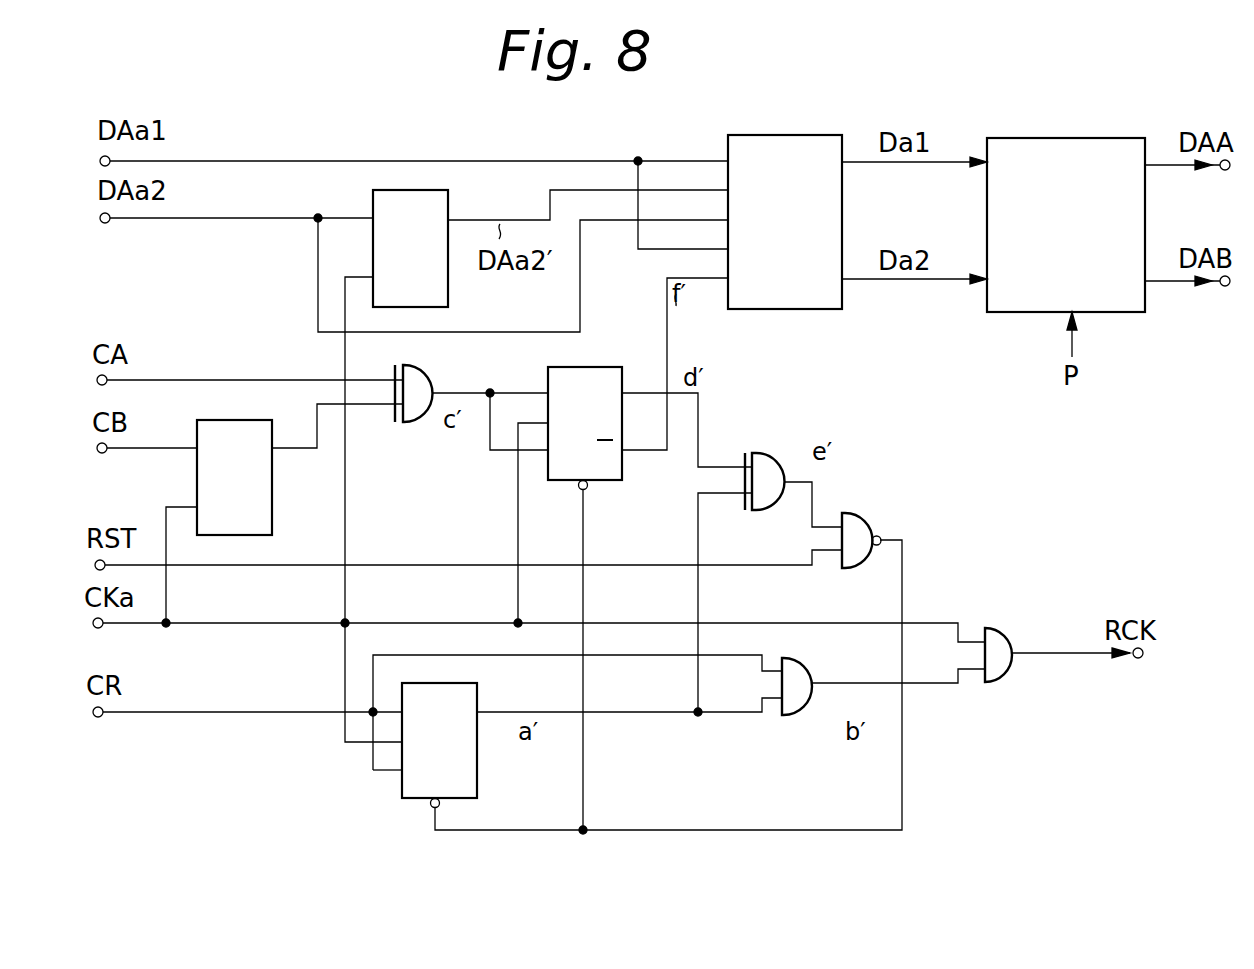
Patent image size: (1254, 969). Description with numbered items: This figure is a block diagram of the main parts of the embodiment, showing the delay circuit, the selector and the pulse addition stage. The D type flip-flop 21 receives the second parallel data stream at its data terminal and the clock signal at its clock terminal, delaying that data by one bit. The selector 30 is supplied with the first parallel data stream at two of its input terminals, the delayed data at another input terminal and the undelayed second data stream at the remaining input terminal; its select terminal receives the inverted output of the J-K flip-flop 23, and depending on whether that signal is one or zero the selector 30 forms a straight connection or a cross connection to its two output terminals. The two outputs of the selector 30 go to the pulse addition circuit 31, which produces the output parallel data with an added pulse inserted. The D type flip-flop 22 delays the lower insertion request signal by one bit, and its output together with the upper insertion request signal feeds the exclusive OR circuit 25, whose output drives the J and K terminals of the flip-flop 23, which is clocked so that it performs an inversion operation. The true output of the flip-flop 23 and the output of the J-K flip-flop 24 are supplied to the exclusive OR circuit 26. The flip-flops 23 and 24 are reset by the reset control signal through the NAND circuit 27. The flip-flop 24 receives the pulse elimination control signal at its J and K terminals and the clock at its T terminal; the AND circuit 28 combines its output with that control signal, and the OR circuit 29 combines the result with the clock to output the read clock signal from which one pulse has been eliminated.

The D type flip-flop 21 is at (448, 190).
The D type flip-flop 22 is at (197, 420).
The J-K flip-flop 23 is at (593, 367).
The J-K flip-flop 24 is at (477, 695).
The exclusive OR circuit 25 is at (427, 378).
The exclusive OR circuit 26 is at (769, 455).
The NAND circuit 27 is at (856, 514).
The AND circuit 28 is at (806, 661).
The OR circuit 29 is at (999, 626).
The selector 30 is at (786, 135).
The pulse addition circuit 31 is at (1056, 138).